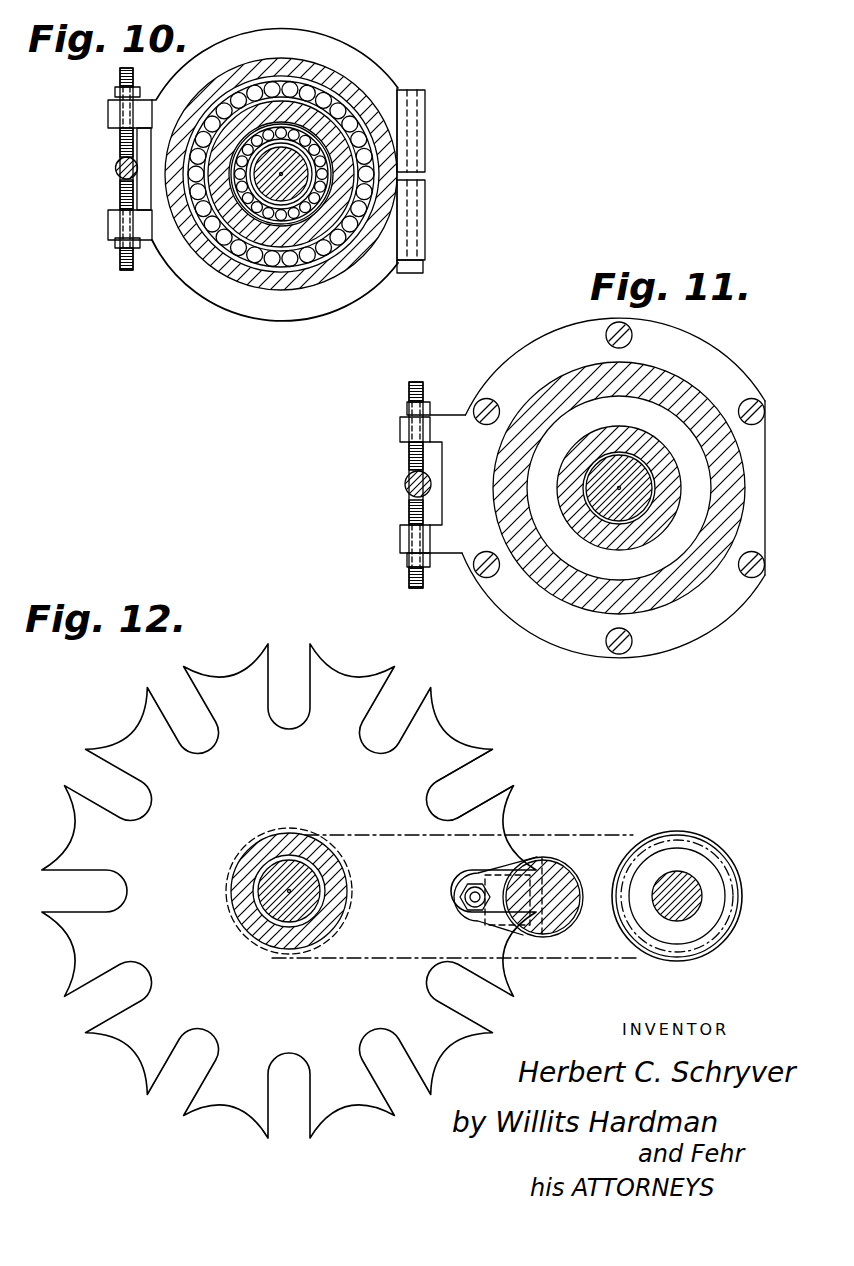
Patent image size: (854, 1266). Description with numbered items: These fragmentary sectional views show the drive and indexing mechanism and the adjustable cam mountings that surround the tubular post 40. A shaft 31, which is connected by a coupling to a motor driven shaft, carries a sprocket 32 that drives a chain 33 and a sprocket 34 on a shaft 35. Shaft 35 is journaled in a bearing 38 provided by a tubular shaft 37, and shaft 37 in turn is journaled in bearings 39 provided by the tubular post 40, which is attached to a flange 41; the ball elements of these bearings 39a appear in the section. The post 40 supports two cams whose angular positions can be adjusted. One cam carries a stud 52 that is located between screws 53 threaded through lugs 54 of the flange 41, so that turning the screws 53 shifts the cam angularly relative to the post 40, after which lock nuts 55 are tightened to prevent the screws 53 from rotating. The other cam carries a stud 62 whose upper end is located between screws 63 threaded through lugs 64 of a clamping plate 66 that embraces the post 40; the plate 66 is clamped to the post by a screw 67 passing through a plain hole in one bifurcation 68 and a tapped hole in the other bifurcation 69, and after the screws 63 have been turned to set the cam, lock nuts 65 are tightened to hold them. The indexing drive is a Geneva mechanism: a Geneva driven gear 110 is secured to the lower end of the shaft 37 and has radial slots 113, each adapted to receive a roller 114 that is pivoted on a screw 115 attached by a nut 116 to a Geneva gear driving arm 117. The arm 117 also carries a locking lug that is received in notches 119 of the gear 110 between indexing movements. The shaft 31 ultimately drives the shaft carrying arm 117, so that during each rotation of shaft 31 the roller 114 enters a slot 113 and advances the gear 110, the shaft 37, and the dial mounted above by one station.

In FIG. 12, the shaft 31 is at (680, 900).
In FIG. 12, the sprocket 32 is at (712, 855).
In FIG. 12, the chain 33 is at (389, 958).
In FIG. 12, the sprocket 34 is at (284, 956).
In FIG. 10, the shaft 35 is at (293, 196).
In FIG. 11, the shaft 35 is at (620, 520).
In FIG. 12, the shaft 35 is at (304, 890).
In FIG. 10, the tubular shaft 37 is at (247, 213).
In FIG. 11, the tubular shaft 37 is at (600, 428).
In FIG. 12, the tubular shaft 37 is at (238, 932).
In FIG. 10, the bearing 38 is at (240, 222).
In FIG. 10, the bearings 39 is at (340, 115).
In FIG. 10, the ball bearings 39a is at (346, 112).
In FIG. 10, the tubular post 40 is at (236, 66).
In FIG. 11, the tubular post 40 is at (566, 374).
In FIG. 11, the flange 41 is at (568, 325).
In FIG. 11, the stud 52 is at (405, 484).
In FIG. 11, the screws 53 is at (409, 389).
In FIG. 11, the lugs 54 is at (407, 410).
In FIG. 11, the lock nuts 55 is at (407, 559).
In FIG. 10, the stud 62 is at (116, 168).
In FIG. 10, the screws 63 is at (120, 142).
In FIG. 10, the lugs 64 is at (108, 112).
In FIG. 10, the lock nuts 65 is at (117, 92).
In FIG. 10, the clamping plate 66 is at (338, 42).
In FIG. 10, the screw 67 is at (426, 268).
In FIG. 10, the bifurcation 68 is at (426, 210).
In FIG. 10, the bifurcation 69 is at (426, 113).
In FIG. 12, the Geneva driven gear 110 is at (147, 687).
In FIG. 12, the radial slots 113 is at (483, 779).
In FIG. 12, the roller 114 is at (497, 918).
In FIG. 12, the screw 115 is at (478, 880).
In FIG. 12, the nut 116 is at (460, 897).
In FIG. 12, the Geneva gear driving arm 117 is at (518, 940).
In FIG. 12, the notches 119 is at (452, 734).